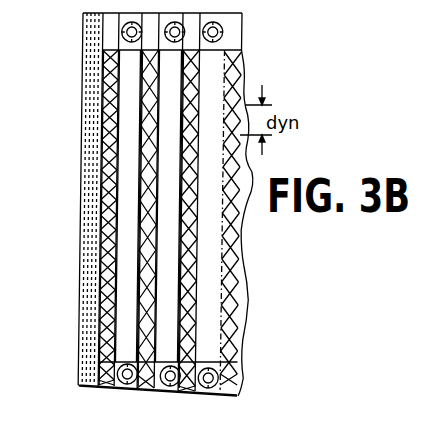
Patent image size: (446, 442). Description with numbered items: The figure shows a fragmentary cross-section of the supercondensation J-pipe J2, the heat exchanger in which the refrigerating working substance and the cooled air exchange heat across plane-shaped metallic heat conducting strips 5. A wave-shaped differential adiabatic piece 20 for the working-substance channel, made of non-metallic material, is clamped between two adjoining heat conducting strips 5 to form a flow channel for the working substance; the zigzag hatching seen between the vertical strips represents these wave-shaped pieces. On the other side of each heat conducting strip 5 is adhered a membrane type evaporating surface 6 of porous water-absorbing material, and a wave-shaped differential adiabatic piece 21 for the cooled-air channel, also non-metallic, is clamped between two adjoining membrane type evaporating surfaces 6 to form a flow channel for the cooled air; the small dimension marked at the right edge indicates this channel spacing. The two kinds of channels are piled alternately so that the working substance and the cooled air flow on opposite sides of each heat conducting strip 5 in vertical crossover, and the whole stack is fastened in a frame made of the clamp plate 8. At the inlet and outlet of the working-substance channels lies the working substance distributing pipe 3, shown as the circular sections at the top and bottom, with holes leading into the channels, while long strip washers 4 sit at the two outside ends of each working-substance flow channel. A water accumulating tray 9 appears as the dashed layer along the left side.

The working substance distributing pipe 3 is at (105, 375).
The washer 4 is at (102, 342).
The heat conducting strip 5 is at (183, 300).
The membrane type evaporating surface 6 is at (141, 270).
The clamp plate 8 is at (122, 229).
The water accumulating tray 9 is at (83, 188).
The dx_n differential adiabatic piece 20 is at (172, 183).
The dy_n differential adiabatic piece 21 is at (142, 241).
The supercondensation J-pipe J2 is at (163, 389).